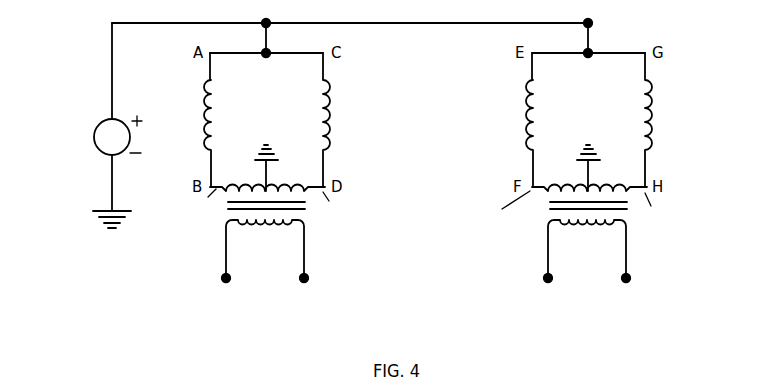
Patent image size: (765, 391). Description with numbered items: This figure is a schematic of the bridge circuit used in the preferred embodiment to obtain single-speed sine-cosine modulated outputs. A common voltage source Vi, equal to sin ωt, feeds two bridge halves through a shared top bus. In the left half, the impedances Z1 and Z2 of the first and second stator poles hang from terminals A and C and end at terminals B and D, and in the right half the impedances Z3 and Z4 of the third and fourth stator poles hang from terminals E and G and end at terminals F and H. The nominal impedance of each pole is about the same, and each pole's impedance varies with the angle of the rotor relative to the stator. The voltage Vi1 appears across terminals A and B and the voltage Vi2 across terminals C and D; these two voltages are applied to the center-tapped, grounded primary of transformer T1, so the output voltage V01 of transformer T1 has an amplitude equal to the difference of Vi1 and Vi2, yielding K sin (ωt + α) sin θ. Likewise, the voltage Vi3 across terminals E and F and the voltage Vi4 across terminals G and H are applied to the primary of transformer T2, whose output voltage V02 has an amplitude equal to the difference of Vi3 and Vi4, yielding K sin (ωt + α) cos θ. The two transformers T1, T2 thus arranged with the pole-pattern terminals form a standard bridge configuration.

The common voltage source Vi is at (85, 125).
The impedance of stator pole 1 Z1 is at (191, 120).
The impedance of stator pole 2 Z2 is at (344, 120).
The impedance of stator pole 3 Z3 is at (511, 120).
The impedance of stator pole 4 Z4 is at (669, 120).
The transformer T1 is at (272, 211).
The transformer T2 is at (575, 211).
The voltage across terminals A–B Vi1 is at (198, 205).
The voltage across terminals C–D Vi2 is at (336, 207).
The voltage across terminals E–F Vi3 is at (497, 208).
The voltage across terminals G–H Vi4 is at (657, 209).
The output voltage of transformer T1 V01 is at (271, 299).
The output voltage of transformer T2 V02 is at (586, 300).